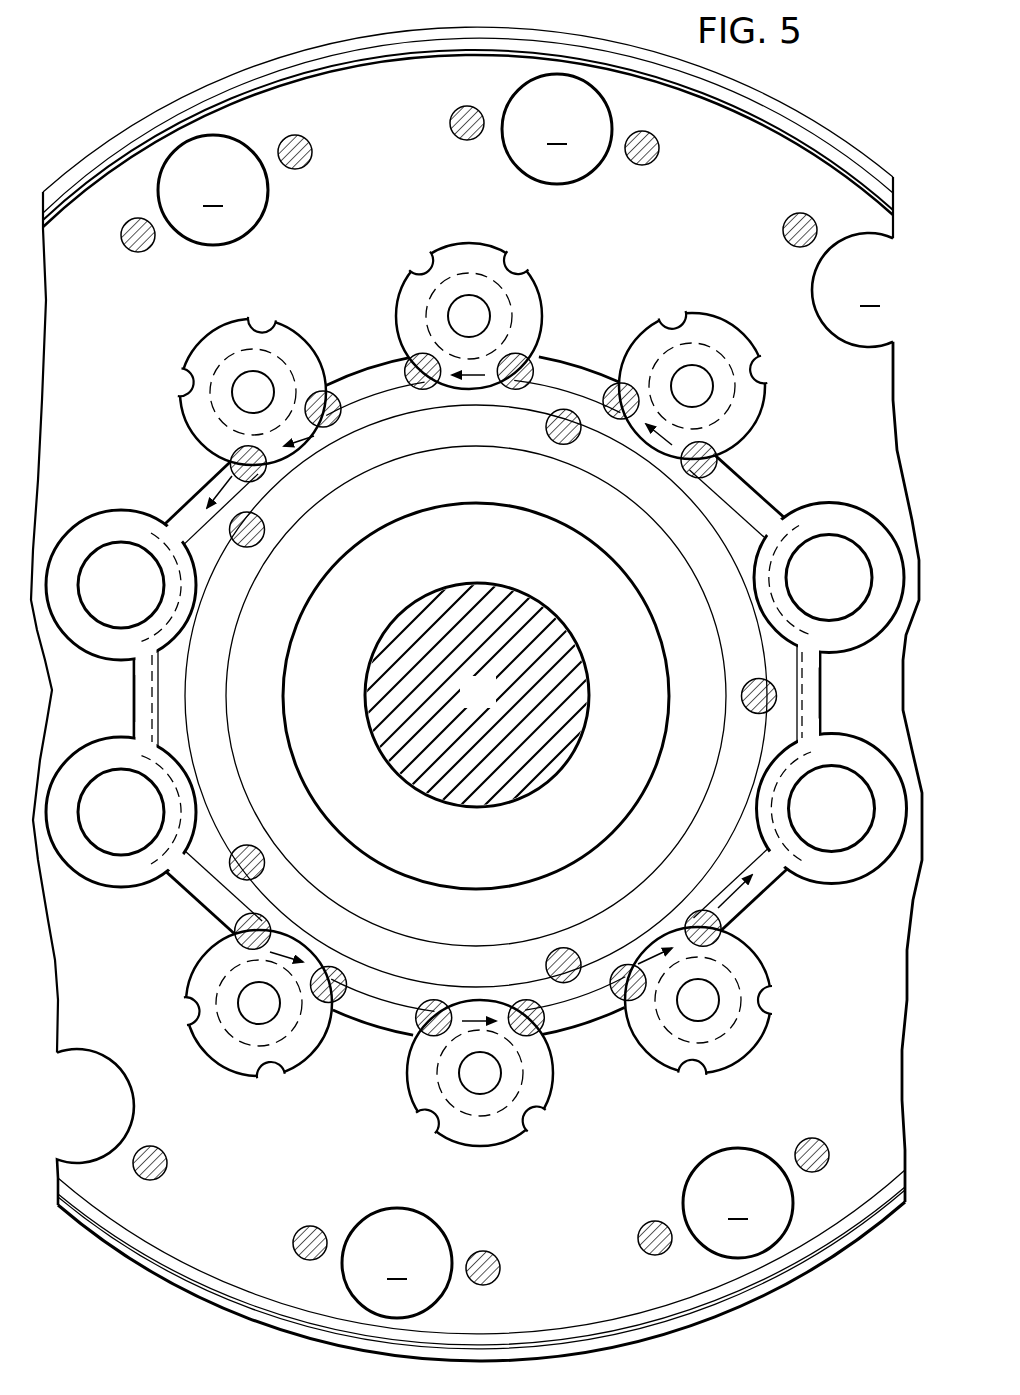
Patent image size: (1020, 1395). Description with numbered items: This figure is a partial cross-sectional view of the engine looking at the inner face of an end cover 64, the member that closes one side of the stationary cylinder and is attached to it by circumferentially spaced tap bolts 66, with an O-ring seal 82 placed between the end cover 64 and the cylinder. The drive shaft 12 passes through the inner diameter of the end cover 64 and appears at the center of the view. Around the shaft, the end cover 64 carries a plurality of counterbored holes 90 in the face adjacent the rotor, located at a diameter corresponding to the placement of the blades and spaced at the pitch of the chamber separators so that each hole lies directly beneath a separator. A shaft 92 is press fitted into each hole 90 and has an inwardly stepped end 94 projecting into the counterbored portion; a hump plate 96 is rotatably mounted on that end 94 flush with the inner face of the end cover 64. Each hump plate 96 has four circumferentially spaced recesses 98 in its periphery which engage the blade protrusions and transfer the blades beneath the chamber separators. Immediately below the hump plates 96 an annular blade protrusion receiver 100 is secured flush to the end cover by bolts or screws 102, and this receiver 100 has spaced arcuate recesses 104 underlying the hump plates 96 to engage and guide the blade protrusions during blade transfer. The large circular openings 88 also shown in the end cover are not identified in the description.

The drive shaft 12 is at (492, 705).
The end cover 64 is at (802, 113).
The tap bolts 66 is at (659, 150).
The O-ring seal 82 is at (827, 151).
The openings E 88 is at (182, 157).
The counterbored holes 90 is at (417, 268).
The shaft 92 is at (218, 333).
The end of shaft 94 is at (268, 378).
The hump plate 96 is at (477, 253).
The recesses 98 is at (510, 264).
The annular blade protrusion receiver 100 is at (390, 425).
The bolts or screws 102 is at (562, 437).
The arcuate recesses 104 is at (310, 463).